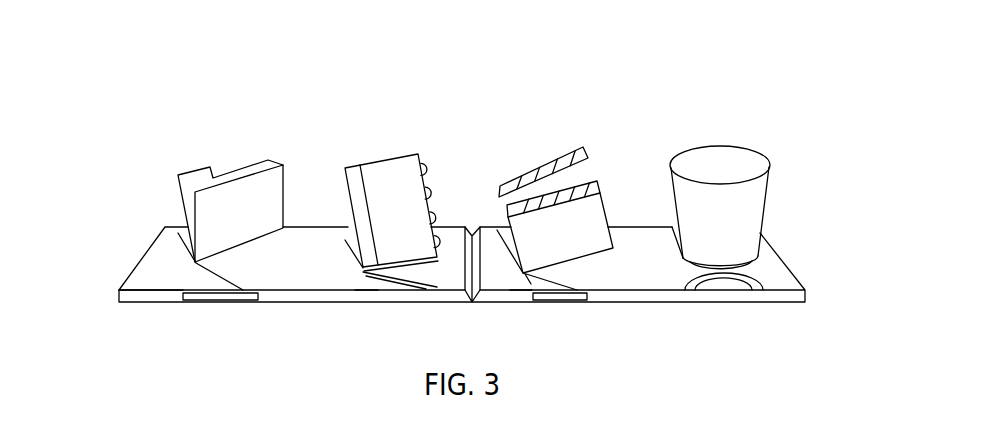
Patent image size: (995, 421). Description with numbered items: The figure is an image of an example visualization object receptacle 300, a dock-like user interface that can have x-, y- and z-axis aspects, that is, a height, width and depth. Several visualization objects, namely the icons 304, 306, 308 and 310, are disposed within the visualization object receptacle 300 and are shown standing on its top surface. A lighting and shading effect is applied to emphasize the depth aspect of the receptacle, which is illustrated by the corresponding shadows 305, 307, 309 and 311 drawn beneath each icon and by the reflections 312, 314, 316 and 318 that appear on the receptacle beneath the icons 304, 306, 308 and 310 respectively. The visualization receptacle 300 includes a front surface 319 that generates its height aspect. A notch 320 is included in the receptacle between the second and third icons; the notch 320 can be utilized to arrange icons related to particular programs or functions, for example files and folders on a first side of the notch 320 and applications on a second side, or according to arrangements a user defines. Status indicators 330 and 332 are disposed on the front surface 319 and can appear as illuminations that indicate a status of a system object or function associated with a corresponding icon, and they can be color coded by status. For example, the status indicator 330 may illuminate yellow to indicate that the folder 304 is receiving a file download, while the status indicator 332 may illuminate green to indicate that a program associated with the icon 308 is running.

The visualization object receptacle 300 is at (798, 272).
The icon 304 is at (194, 167).
The shadow 305 is at (196, 263).
The icon 306 is at (370, 160).
The shadow 307 is at (359, 268).
The icon 308 is at (513, 185).
The shadow 309 is at (523, 273).
The icon 310 is at (718, 145).
The shadow 311 is at (678, 240).
The reflection 312 is at (202, 280).
The reflection 314 is at (365, 290).
The reflection 316 is at (527, 283).
The reflection 318 is at (745, 289).
The front surface 319 is at (133, 298).
The notch 320 is at (473, 302).
The status indicator 330 is at (213, 302).
The status indicator 332 is at (565, 302).